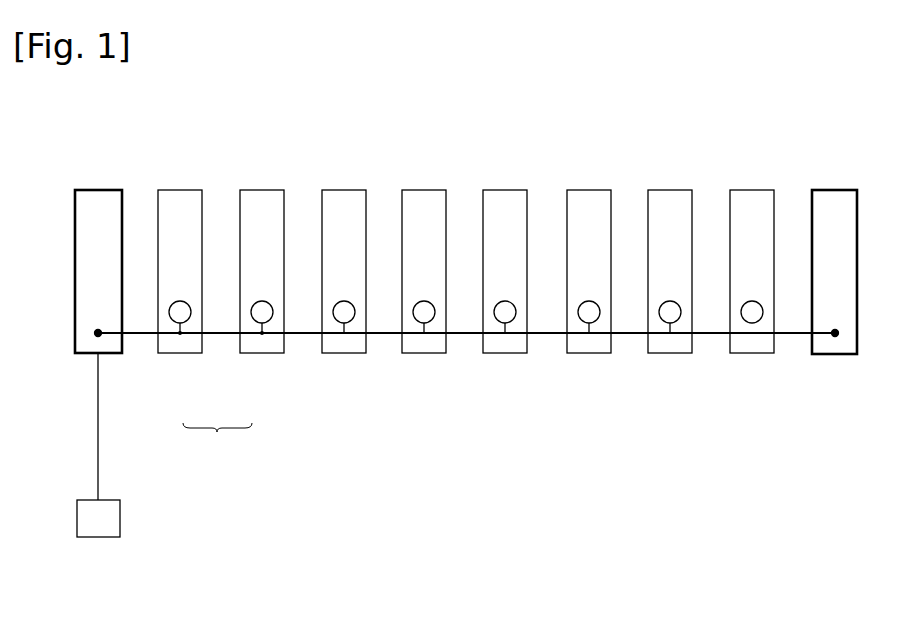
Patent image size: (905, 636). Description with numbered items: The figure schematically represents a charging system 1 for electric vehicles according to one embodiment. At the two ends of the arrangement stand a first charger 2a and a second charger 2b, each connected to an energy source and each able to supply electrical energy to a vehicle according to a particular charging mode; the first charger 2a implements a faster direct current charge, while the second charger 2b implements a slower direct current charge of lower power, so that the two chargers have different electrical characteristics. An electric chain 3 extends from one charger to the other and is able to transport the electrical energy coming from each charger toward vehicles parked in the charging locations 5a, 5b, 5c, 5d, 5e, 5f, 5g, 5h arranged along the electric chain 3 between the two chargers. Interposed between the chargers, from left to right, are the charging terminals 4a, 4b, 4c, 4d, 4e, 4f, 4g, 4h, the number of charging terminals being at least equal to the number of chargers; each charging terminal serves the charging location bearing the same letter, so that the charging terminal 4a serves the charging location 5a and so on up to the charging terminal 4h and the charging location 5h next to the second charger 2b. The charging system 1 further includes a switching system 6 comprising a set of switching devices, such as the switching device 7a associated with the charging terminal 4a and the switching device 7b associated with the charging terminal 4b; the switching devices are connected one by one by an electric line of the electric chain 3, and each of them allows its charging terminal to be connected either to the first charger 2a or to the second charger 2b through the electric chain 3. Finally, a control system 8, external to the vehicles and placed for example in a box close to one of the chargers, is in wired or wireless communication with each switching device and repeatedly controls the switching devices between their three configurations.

The charging system 1 is at (327, 503).
The first charger 2a is at (98, 190).
The second charger 2b is at (832, 190).
The electric chain 3 is at (300, 335).
The charging terminal 4a is at (173, 353).
The charging terminal 4b is at (268, 353).
The charging terminal 4c is at (343, 353).
The charging terminal 4d is at (422, 353).
The charging terminal 4e is at (505, 353).
The charging terminal 4f is at (585, 353).
The charging terminal 4g is at (670, 353).
The charging terminal 4h is at (752, 353).
The charging location 5a is at (190, 168).
The charging location 5b is at (272, 168).
The charging location 5c is at (354, 168).
The charging location 5d is at (434, 168).
The charging location 5e is at (515, 168).
The charging location 5f is at (596, 168).
The charging location 5g is at (680, 168).
The charging location 5h is at (762, 168).
The switching system 6 is at (217, 437).
The switching device 7a is at (183, 337).
The switching device 7b is at (257, 337).
The control system 8 is at (103, 528).